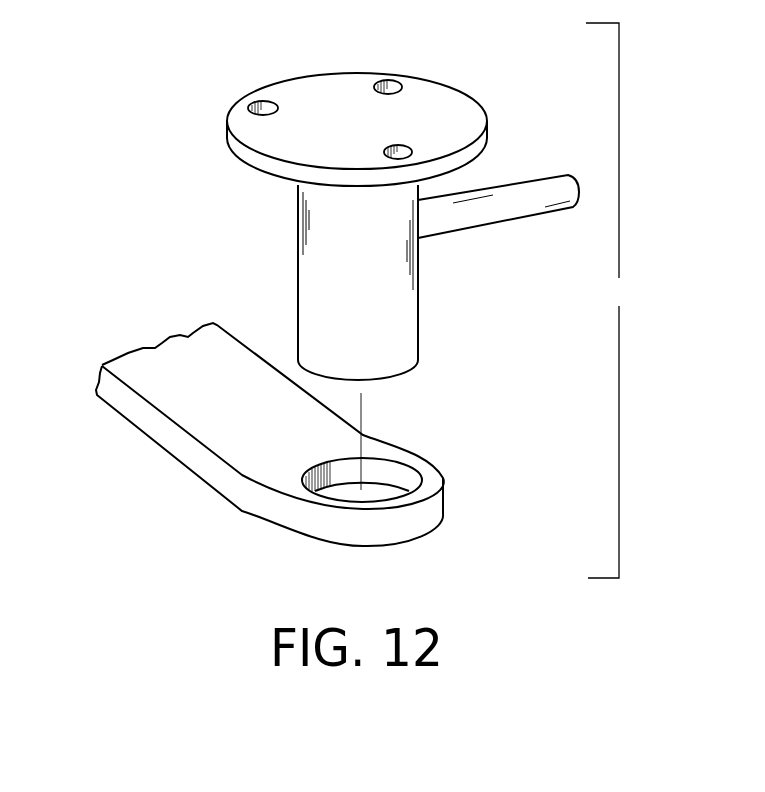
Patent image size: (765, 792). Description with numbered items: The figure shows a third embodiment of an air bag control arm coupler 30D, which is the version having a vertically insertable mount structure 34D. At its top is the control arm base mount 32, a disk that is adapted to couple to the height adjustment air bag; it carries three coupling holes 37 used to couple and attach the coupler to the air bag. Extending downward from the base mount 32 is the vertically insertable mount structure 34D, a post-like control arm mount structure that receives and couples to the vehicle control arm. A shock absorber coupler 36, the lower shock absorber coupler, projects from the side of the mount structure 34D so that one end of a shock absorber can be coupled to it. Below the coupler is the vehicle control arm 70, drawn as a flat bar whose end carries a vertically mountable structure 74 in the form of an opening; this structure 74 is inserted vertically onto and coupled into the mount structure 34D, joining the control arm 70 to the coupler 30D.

The control arm coupler 30D is at (615, 300).
The control arm base mount 32 is at (448, 103).
The coupling holes 37 is at (392, 82).
The vertically insertable mount structure 34D is at (405, 347).
The shock absorber coupler 36 is at (528, 193).
The control arm 70 is at (138, 418).
The vertically mountable structure 74 is at (400, 482).